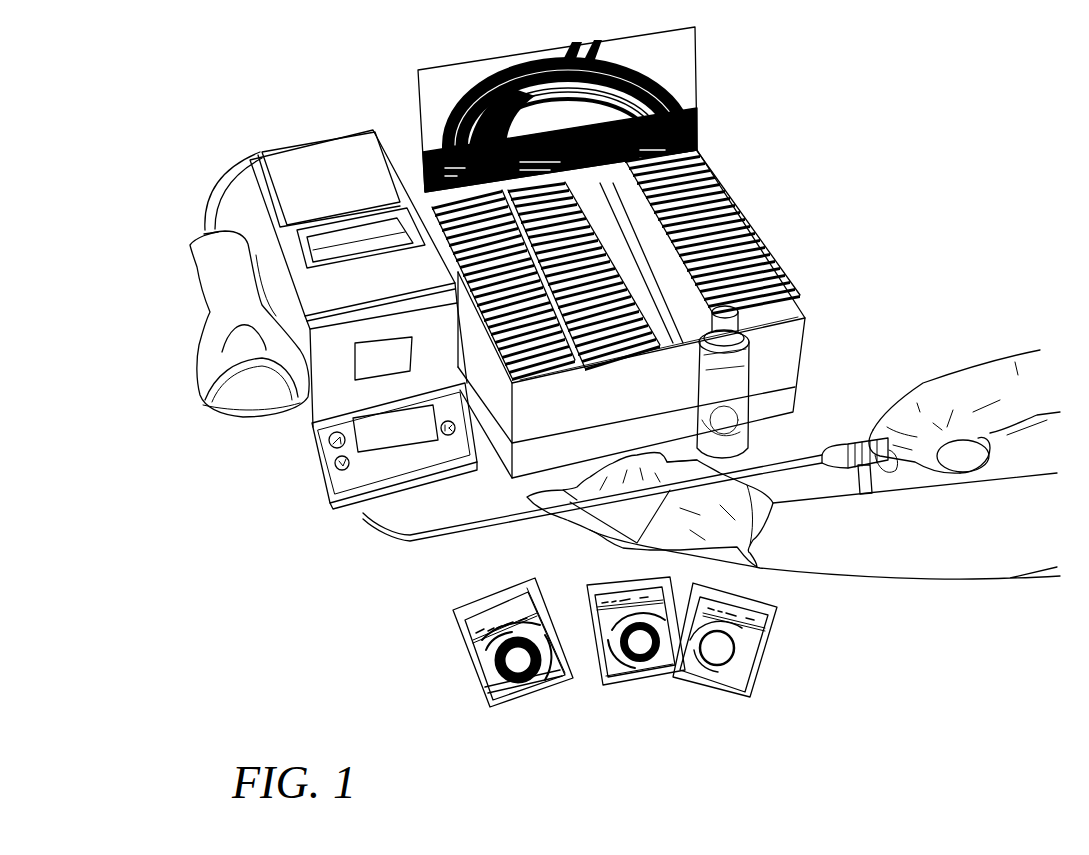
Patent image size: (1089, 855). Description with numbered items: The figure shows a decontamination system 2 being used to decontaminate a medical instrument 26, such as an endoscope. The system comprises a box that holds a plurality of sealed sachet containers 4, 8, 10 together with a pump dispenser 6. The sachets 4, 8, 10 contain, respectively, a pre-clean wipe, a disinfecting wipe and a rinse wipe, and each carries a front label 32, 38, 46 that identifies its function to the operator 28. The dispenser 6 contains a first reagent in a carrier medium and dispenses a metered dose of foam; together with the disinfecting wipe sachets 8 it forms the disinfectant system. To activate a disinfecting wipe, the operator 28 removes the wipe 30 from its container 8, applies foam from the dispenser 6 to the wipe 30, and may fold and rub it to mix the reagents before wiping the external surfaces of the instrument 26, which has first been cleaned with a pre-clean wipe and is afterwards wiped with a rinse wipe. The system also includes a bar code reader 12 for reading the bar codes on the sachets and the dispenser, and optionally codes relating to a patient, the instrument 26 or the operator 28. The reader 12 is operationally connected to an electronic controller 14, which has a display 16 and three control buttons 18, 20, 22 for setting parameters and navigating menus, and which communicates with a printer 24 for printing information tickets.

The decontamination system 2 is at (798, 130).
The pre-clean wipe sachet 4 is at (478, 243).
The dispenser 6 is at (730, 373).
The disinfecting wipe sachet 8 is at (600, 262).
The rinse wipe sachet 10 is at (700, 240).
The bar code reader 12 is at (185, 383).
The electronic controller 14 is at (312, 505).
The display 16 is at (372, 468).
The control button 18 is at (450, 441).
The control button 20 is at (327, 440).
The control button 22 is at (334, 468).
The printer 24 is at (318, 120).
The medical instrument 26 is at (805, 445).
The operator 28 is at (933, 592).
The wipe 30 is at (600, 536).
The front label 32 is at (480, 633).
The front label 38 is at (640, 685).
The front label 46 is at (747, 637).